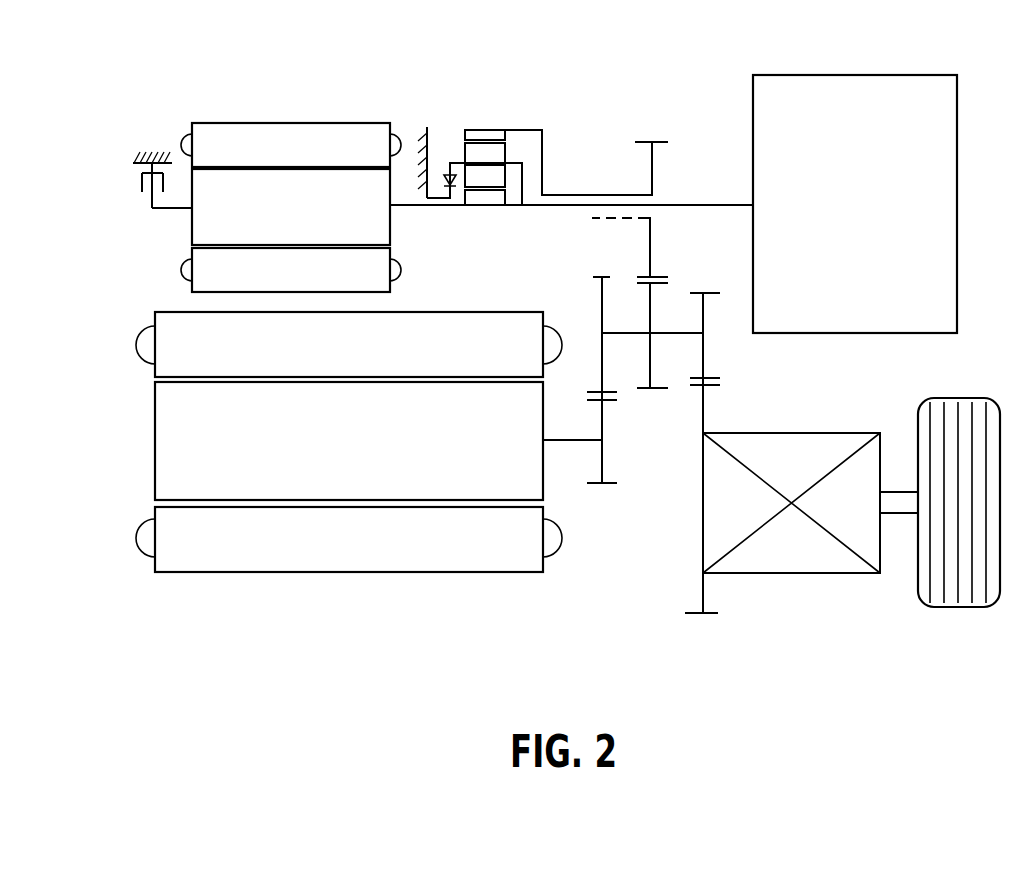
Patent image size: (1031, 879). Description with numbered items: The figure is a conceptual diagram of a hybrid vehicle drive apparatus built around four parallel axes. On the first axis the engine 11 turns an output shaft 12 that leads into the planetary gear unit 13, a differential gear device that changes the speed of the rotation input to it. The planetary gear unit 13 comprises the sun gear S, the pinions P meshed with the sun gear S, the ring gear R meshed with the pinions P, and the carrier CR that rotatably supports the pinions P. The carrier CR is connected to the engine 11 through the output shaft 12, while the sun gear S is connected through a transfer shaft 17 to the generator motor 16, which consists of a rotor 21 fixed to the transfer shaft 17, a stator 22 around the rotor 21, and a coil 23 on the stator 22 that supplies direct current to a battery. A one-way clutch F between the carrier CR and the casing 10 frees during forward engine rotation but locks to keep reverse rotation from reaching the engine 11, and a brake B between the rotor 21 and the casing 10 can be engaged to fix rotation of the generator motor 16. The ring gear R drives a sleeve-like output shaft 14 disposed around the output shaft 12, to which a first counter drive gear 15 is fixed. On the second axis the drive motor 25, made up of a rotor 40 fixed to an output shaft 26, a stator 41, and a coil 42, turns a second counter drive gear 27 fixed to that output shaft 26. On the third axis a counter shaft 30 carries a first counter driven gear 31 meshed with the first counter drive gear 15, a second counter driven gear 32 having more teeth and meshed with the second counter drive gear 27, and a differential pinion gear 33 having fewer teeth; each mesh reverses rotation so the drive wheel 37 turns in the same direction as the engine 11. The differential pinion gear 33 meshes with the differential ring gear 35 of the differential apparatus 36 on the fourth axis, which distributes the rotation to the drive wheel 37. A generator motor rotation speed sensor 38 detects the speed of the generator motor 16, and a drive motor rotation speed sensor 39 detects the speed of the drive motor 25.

The casing 10 is at (138, 160).
The engine 11 is at (835, 74).
The output shaft 12 is at (693, 204).
The planetary gear unit 13 is at (517, 149).
The output shaft 14 is at (575, 194).
The first counter drive gear 15 is at (652, 140).
The generator motor 16 is at (287, 104).
The transfer shaft 17 is at (436, 210).
The rotor 21 is at (190, 221).
The stator 22 is at (215, 122).
The coil 23 is at (185, 138).
The drive motor 25 is at (348, 582).
The output shaft 26 is at (558, 442).
The second counter drive gear 27 is at (597, 486).
The counter shaft 30 is at (623, 333).
The first counter driven gear 31 is at (650, 390).
The second counter driven gear 32 is at (594, 278).
The differential pinion gear 33 is at (694, 292).
The differential ring gear 35 is at (708, 386).
The differential apparatus 36 is at (810, 420).
The drive wheel 37 is at (968, 398).
The generator motor rotation speed sensor 38 is at (403, 216).
The drive motor rotation speed sensor 39 is at (568, 424).
The rotor 40 is at (172, 447).
The stator 41 is at (168, 320).
The coil 42 is at (140, 348).
The brake B is at (140, 185).
The one-way clutch F is at (450, 173).
The ring gear R is at (483, 132).
The pinions P is at (493, 156).
The sun gear S is at (486, 212).
The carrier CR is at (520, 208).